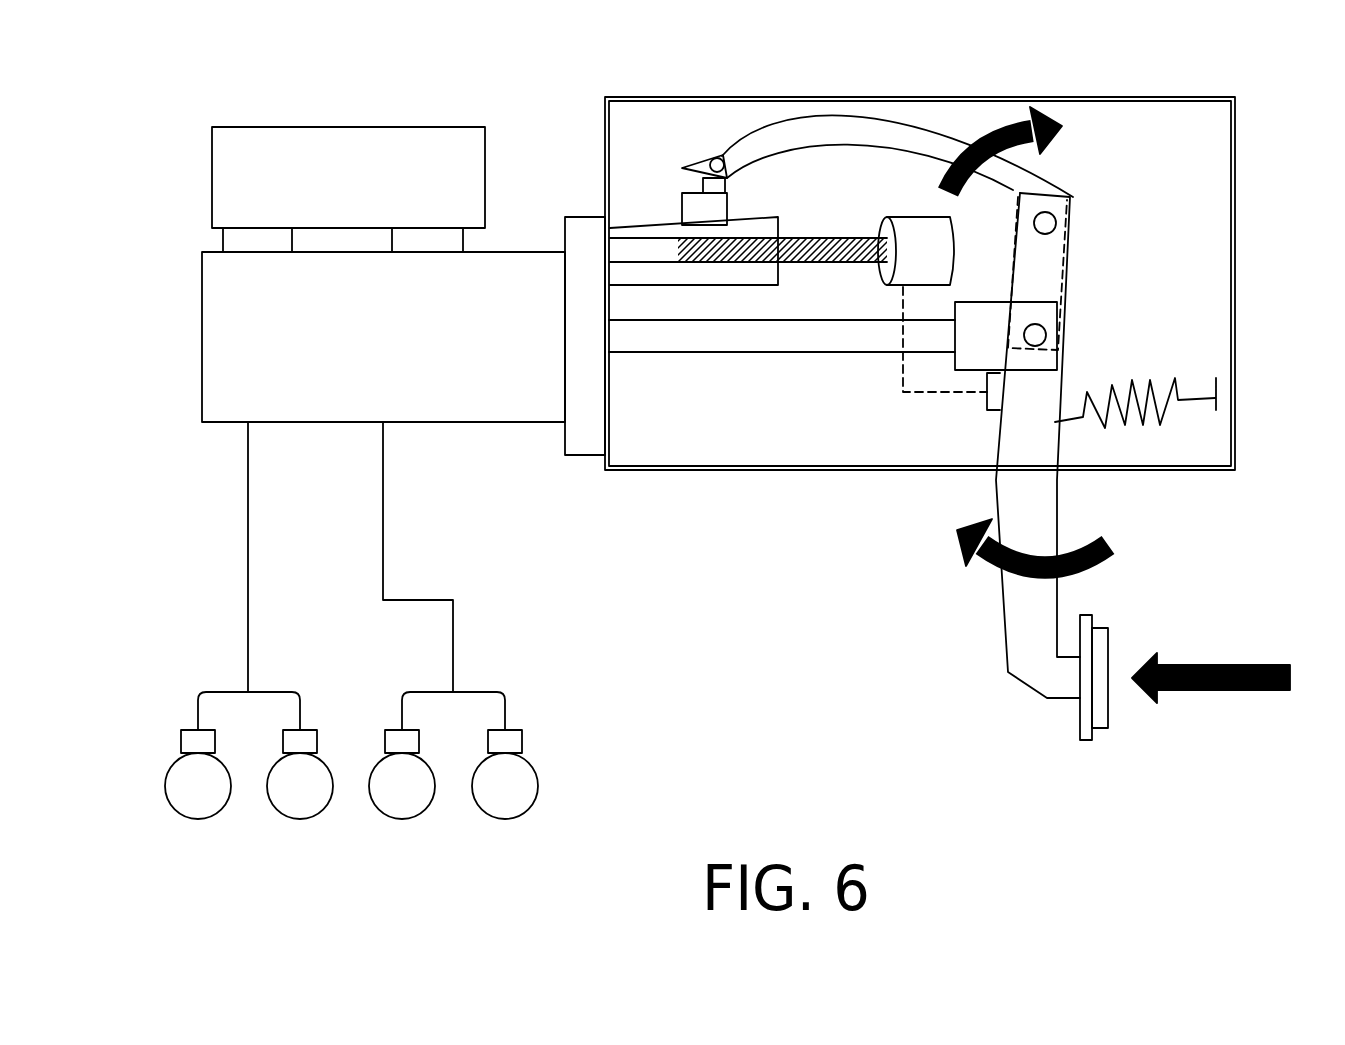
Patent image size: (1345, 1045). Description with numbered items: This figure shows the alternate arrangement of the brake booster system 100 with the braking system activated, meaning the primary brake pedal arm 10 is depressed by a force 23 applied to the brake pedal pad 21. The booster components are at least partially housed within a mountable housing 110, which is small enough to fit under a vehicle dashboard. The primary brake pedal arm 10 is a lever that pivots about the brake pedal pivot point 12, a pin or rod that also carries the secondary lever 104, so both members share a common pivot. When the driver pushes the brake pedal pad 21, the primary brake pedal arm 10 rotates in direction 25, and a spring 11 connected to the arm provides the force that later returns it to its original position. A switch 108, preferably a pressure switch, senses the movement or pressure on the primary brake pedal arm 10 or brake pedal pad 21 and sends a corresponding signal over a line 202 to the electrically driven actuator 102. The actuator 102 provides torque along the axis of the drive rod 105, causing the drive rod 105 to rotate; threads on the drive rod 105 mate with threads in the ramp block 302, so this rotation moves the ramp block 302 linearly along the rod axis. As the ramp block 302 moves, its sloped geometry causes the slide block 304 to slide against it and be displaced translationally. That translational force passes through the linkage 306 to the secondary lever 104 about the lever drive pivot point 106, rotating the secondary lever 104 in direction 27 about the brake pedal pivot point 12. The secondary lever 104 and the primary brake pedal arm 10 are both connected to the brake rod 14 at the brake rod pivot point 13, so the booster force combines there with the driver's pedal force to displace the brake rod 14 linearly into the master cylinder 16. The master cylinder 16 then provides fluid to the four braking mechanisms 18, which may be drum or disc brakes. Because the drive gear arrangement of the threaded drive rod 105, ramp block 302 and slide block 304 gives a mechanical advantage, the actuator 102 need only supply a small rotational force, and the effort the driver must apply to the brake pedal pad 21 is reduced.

The primary brake pedal arm 10 is at (1020, 632).
The spring 11 is at (1143, 400).
The brake pedal pivot point 12 is at (1045, 223).
The brake rod pivot point 13 is at (1037, 335).
The brake rod 14 is at (693, 340).
The master cylinder 16 is at (238, 337).
The braking mechanisms 18 is at (190, 730).
The brake pedal pad 21 is at (1110, 668).
The force 23 is at (1220, 690).
The direction 25 is at (1103, 533).
The direction 27 is at (1036, 112).
The brake booster system 100 is at (1193, 148).
The actuator 102 is at (921, 263).
The secondary lever 104 is at (847, 127).
The drive rod 105 is at (863, 253).
The lever drive pivot point 106 is at (712, 158).
The switch 108 is at (995, 400).
The mountable housing 110 is at (1183, 97).
The line 202 is at (930, 393).
The ramp block 302 is at (735, 275).
The slide block 304 is at (697, 212).
The linkage 306 is at (702, 187).